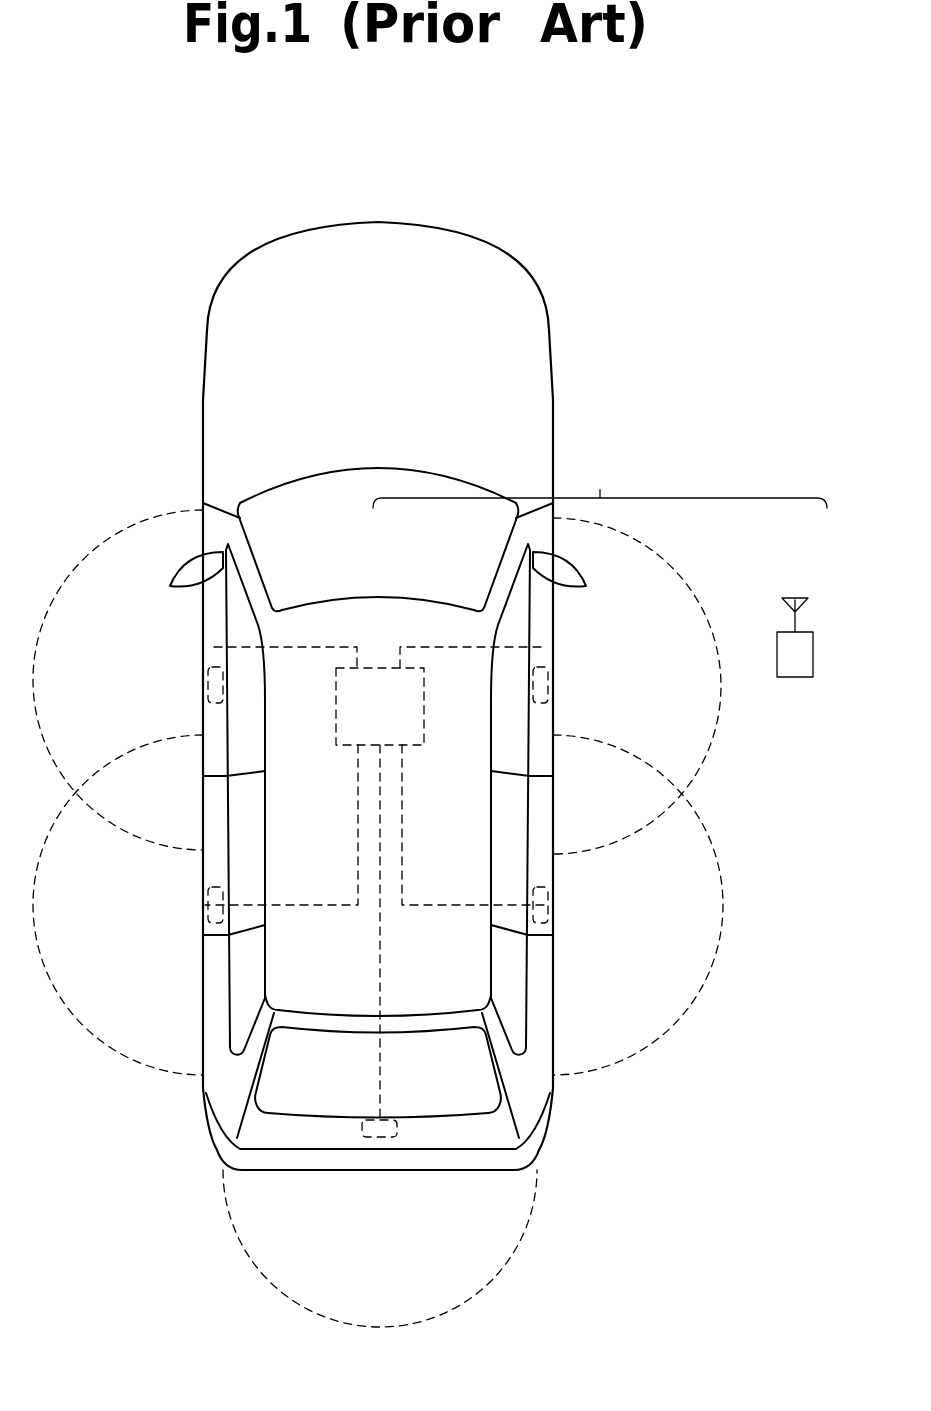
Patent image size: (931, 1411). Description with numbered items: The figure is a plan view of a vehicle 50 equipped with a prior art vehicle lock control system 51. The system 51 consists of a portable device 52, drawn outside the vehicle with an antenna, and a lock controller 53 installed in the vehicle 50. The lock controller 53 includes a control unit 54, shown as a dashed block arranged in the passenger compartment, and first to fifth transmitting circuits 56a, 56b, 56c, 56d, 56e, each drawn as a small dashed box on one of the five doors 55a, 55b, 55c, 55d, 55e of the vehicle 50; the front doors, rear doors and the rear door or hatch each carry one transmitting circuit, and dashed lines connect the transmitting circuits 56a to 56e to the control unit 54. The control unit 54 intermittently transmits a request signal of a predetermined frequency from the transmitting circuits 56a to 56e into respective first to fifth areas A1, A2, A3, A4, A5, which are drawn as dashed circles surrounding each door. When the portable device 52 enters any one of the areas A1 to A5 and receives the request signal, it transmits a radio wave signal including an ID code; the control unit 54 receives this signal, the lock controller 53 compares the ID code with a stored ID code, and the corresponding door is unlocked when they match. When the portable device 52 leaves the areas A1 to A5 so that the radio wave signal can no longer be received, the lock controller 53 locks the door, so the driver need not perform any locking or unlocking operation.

The vehicle 50 is at (506, 228).
The vehicle lock control system 51 is at (615, 478).
The portable device 52 is at (780, 630).
The lock controller 53 is at (424, 606).
The control unit 54 is at (332, 704).
The first door 55a is at (546, 608).
The second door 55b is at (210, 605).
The third door 55c is at (546, 798).
The fourth door 55d is at (210, 800).
The fifth door 55e is at (278, 1140).
The first transmitting circuit 56a is at (555, 716).
The second transmitting circuit 56b is at (205, 712).
The third transmitting circuit 56c is at (548, 914).
The fourth transmitting circuit 56d is at (208, 914).
The fifth transmitting circuit 56e is at (367, 1140).
The first area A1 is at (692, 680).
The second area A2 is at (108, 675).
The third area A3 is at (693, 920).
The fourth area A4 is at (105, 920).
The fifth area A5 is at (395, 1283).